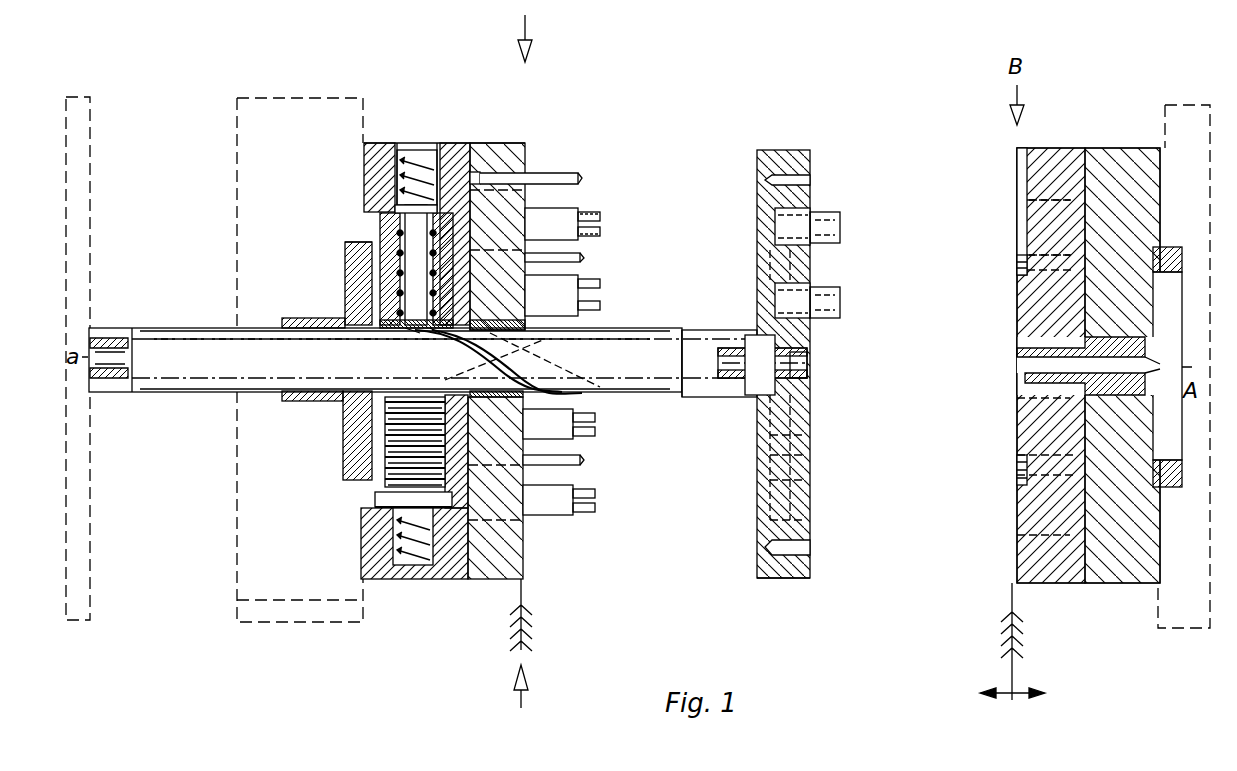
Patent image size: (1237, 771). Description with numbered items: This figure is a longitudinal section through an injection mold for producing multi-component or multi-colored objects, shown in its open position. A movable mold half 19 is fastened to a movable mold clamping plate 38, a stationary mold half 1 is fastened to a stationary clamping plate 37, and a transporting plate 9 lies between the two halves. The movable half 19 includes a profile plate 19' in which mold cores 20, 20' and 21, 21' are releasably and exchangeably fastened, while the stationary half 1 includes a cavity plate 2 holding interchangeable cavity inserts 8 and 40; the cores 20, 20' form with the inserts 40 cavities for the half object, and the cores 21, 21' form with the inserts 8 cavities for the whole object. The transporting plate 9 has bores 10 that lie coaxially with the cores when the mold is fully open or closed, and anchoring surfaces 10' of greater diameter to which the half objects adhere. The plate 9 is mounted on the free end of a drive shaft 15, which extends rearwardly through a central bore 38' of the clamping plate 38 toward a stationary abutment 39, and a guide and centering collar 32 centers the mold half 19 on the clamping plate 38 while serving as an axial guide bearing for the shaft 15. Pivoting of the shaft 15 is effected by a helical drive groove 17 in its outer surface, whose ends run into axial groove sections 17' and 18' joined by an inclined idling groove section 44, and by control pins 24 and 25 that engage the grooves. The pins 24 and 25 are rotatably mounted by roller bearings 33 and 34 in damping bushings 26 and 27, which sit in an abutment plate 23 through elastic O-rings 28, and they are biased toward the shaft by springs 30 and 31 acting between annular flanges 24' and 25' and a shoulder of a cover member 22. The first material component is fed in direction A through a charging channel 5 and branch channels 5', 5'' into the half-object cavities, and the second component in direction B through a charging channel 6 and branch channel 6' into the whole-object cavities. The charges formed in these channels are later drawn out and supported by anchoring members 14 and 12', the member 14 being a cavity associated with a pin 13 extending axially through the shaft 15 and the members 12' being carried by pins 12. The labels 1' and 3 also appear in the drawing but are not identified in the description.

The stationary mold half 1 is at (1088, 313).
The nozzle body part 1' is at (1122, 335).
The cavity plate 2 is at (1070, 168).
The sealing ring 3 is at (1168, 248).
The charging channel 5 is at (1183, 366).
The branch channel 5' is at (1071, 397).
The branch channel 5'' is at (992, 471).
The charging channel 6 is at (992, 211).
The branch channel 6' is at (992, 278).
The cavity inserts 8 is at (1040, 308).
The transporting plate 9 is at (800, 560).
The bores 10 is at (814, 364).
The surfaces 10' is at (844, 269).
The pins 12 is at (551, 217).
The anchoring members 12' is at (606, 227).
The pin 13 is at (806, 355).
The anchoring member 14 is at (808, 365).
The drive shaft 15 is at (726, 387).
The helical drive groove 17 is at (423, 339).
The axial groove section 17' is at (417, 363).
The axial groove section 18' is at (448, 366).
The movable mold half 19 is at (444, 182).
The profile plate 19' is at (495, 518).
The mold cores 20 is at (582, 518).
The mold cores 20' is at (596, 459).
The mold cores 21 is at (593, 198).
The mold cores 21' is at (620, 214).
The cover member 22 is at (452, 580).
The abutment plate 23 is at (375, 500).
The control pin 24 is at (325, 283).
The annular flange 24' is at (357, 180).
The control pin 25 is at (330, 497).
The annular flange 25' is at (364, 489).
The damping bushing 26 is at (345, 250).
The damping bushing 27 is at (390, 463).
The elastic O-rings 28 is at (385, 230).
The spring 30 is at (425, 143).
The spring 31 is at (405, 537).
The guide and centering collar 32 is at (345, 302).
The roller bearing 33 is at (360, 337).
The roller bearing 34 is at (492, 143).
The stationary clamping plate 37 is at (1180, 120).
The movable mold clamping plate 38 is at (300, 334).
The central bore 38' is at (281, 497).
The stationary abutment 39 is at (68, 226).
The cavity inserts 40 is at (1040, 500).
The idling groove section 44 is at (582, 292).